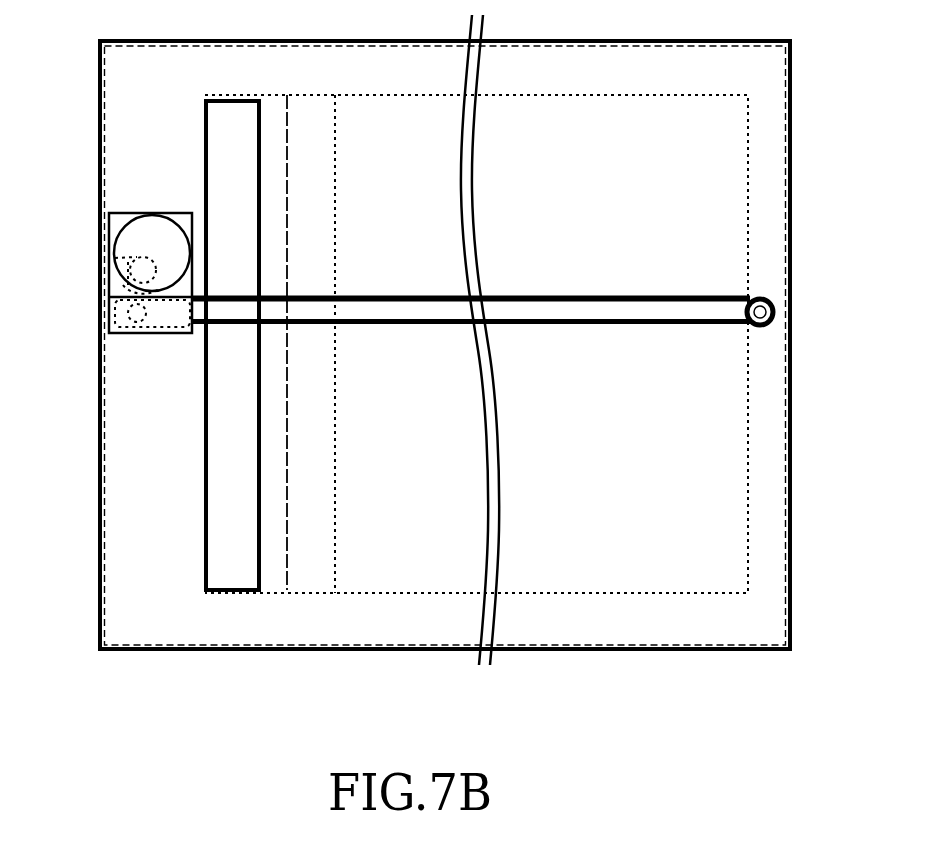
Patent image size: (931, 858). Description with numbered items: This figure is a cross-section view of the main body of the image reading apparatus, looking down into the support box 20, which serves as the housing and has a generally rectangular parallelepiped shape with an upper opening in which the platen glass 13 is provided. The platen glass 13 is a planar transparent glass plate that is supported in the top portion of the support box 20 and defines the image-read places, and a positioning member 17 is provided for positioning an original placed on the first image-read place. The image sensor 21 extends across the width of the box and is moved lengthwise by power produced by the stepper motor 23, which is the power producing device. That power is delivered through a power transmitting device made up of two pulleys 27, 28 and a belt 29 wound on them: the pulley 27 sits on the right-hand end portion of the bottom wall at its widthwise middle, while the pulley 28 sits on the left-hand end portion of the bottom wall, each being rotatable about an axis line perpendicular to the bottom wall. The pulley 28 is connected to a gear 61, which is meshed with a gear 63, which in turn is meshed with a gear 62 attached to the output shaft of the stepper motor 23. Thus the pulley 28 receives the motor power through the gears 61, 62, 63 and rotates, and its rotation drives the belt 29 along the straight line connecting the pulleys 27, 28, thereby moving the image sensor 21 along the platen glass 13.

The platen glass 13 is at (397, 597).
The positioning member 17 is at (319, 582).
The support box 20 is at (100, 527).
The image sensor 21 is at (215, 445).
The stepper motor 23 is at (128, 243).
The pulley 27 is at (757, 298).
The pulley 28 is at (108, 336).
The belt 29 is at (712, 325).
The gear 61 is at (103, 298).
The gear 62 is at (102, 272).
The gear 63 is at (103, 250).